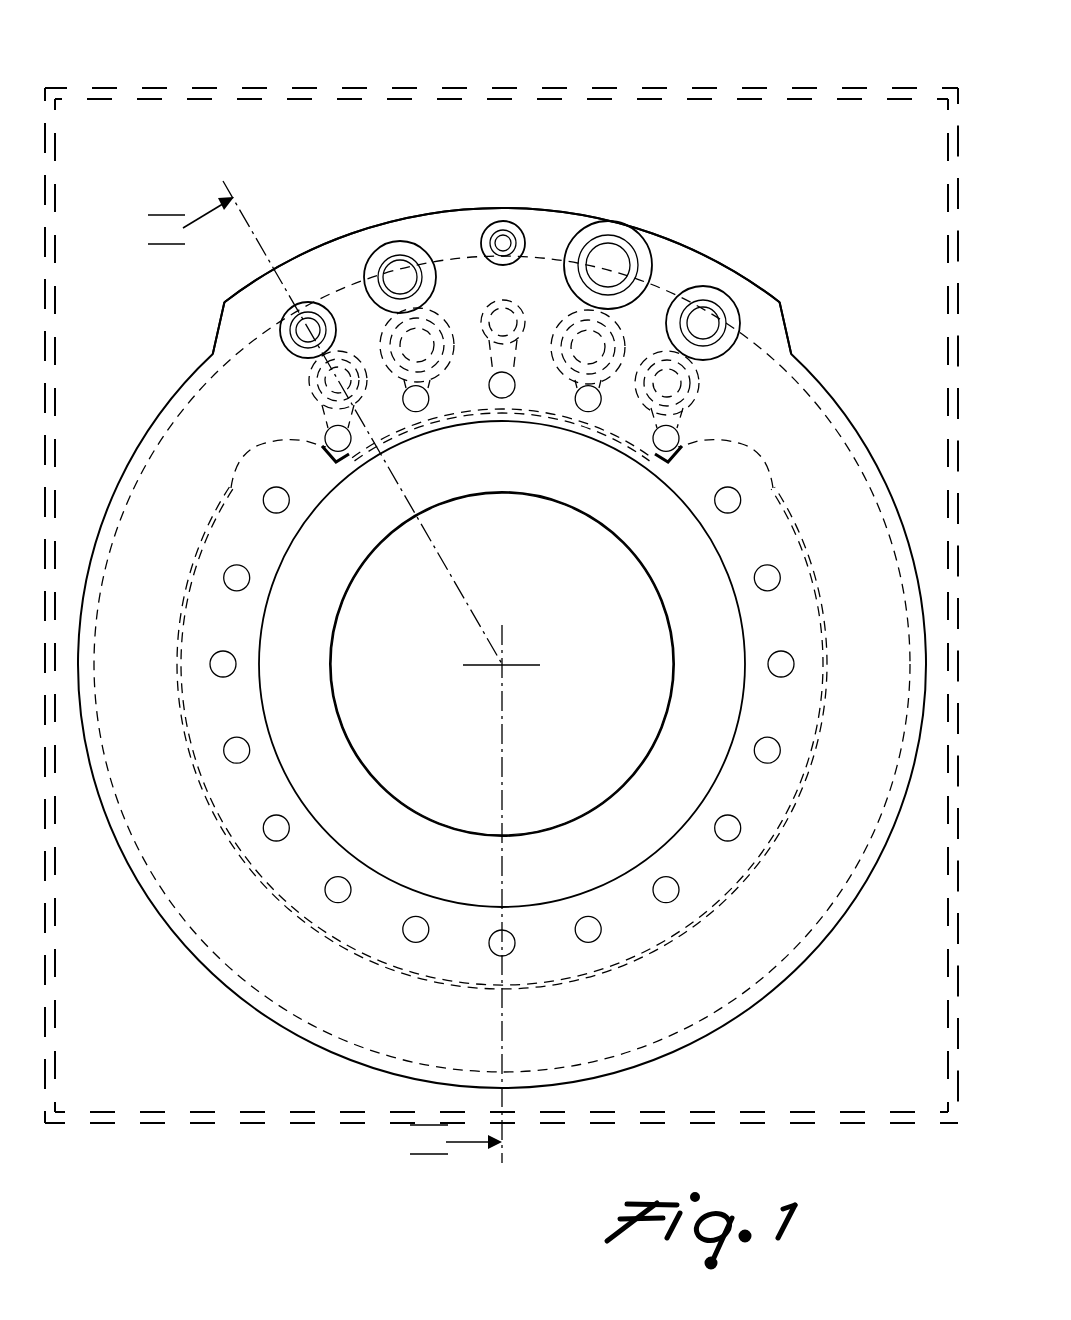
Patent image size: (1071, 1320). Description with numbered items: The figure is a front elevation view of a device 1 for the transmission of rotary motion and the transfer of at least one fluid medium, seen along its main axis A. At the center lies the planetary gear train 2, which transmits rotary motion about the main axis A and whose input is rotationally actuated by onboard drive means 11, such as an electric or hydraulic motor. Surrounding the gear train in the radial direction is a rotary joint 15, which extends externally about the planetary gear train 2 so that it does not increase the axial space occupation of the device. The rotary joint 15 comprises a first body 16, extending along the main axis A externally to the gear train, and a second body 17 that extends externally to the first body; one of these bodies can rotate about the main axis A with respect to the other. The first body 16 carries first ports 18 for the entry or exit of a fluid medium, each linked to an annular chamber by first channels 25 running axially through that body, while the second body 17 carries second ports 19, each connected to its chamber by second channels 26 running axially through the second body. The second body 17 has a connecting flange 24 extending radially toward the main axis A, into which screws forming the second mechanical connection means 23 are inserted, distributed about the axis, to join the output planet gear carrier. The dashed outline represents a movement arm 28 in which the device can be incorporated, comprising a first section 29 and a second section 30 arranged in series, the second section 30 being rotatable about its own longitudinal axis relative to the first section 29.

The device for the transmission of rotary motion and the transfer of at least one fl 1 is at (710, 172).
The planetary gear train 2 is at (447, 808).
The drive means 11 is at (580, 735).
The rotary joint 15 is at (862, 368).
The first body 16 is at (740, 368).
The second body 17 is at (325, 277).
The first port 18 is at (313, 383).
The second port 19 is at (290, 323).
The second mechanical connection means 23 is at (417, 944).
The connecting flange 24 is at (333, 842).
The first channels 25 is at (307, 407).
The second channels 26 is at (296, 347).
The movement arm 28 is at (501, 561).
The first section 29 is at (900, 99).
The second section 30 is at (850, 88).
The main axis A is at (507, 660).